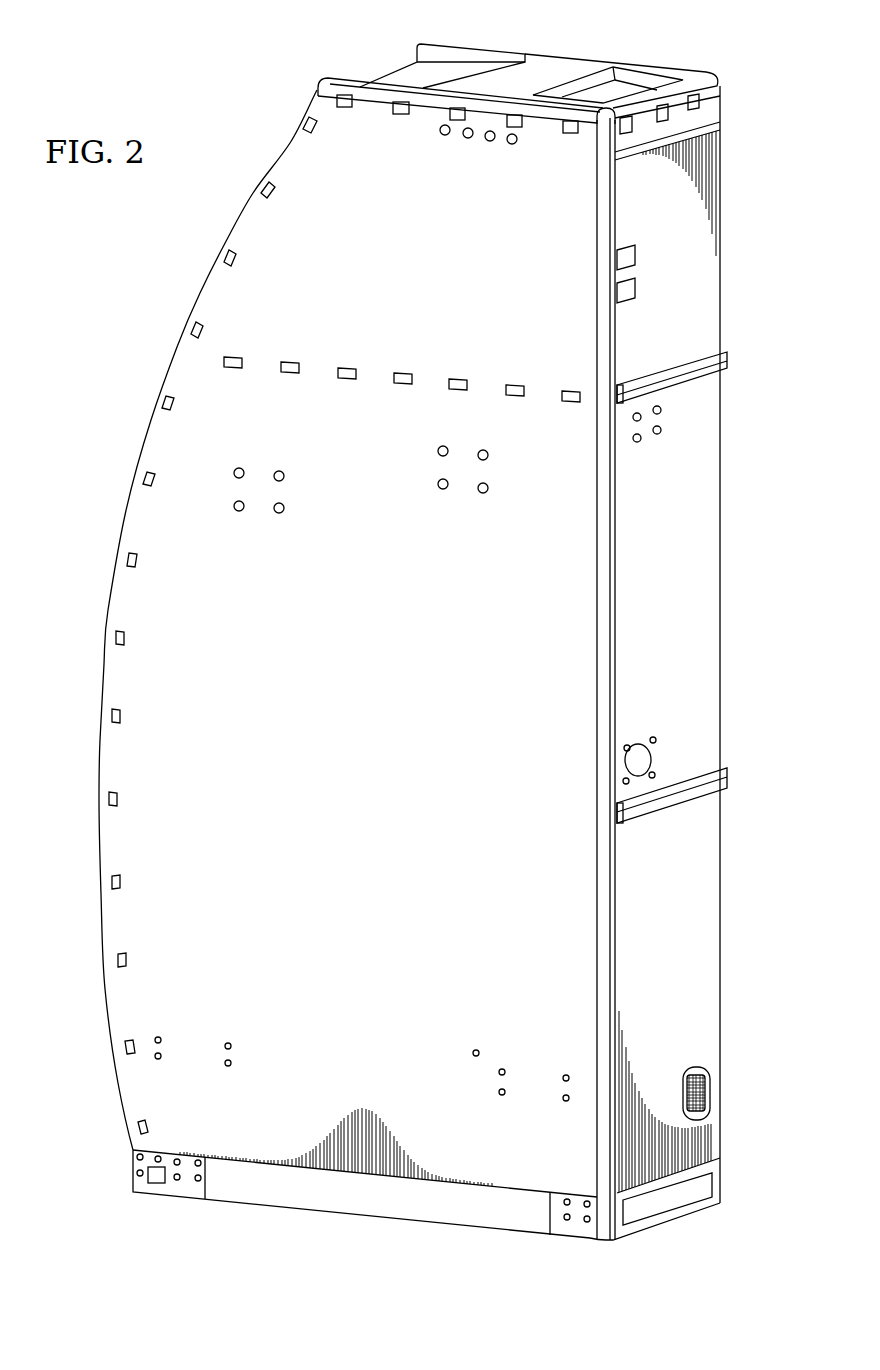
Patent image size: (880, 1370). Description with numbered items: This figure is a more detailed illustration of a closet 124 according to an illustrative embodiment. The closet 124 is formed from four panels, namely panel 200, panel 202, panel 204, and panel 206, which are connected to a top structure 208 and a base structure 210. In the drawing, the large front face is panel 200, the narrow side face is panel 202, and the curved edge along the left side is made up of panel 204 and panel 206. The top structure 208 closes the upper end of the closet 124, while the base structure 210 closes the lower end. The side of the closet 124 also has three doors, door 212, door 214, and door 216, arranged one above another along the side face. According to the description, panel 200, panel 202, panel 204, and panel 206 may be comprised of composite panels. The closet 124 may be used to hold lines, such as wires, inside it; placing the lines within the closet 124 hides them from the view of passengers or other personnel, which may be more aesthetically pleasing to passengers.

The closet 124 is at (722, 463).
The panel 200 is at (375, 766).
The panel 202 is at (722, 213).
The panel 204 is at (203, 278).
The panel 206 is at (100, 662).
The top structure 208 is at (557, 63).
The base structure 210 is at (363, 1215).
The door 212 is at (690, 281).
The door 214 is at (690, 621).
The door 216 is at (690, 1010).